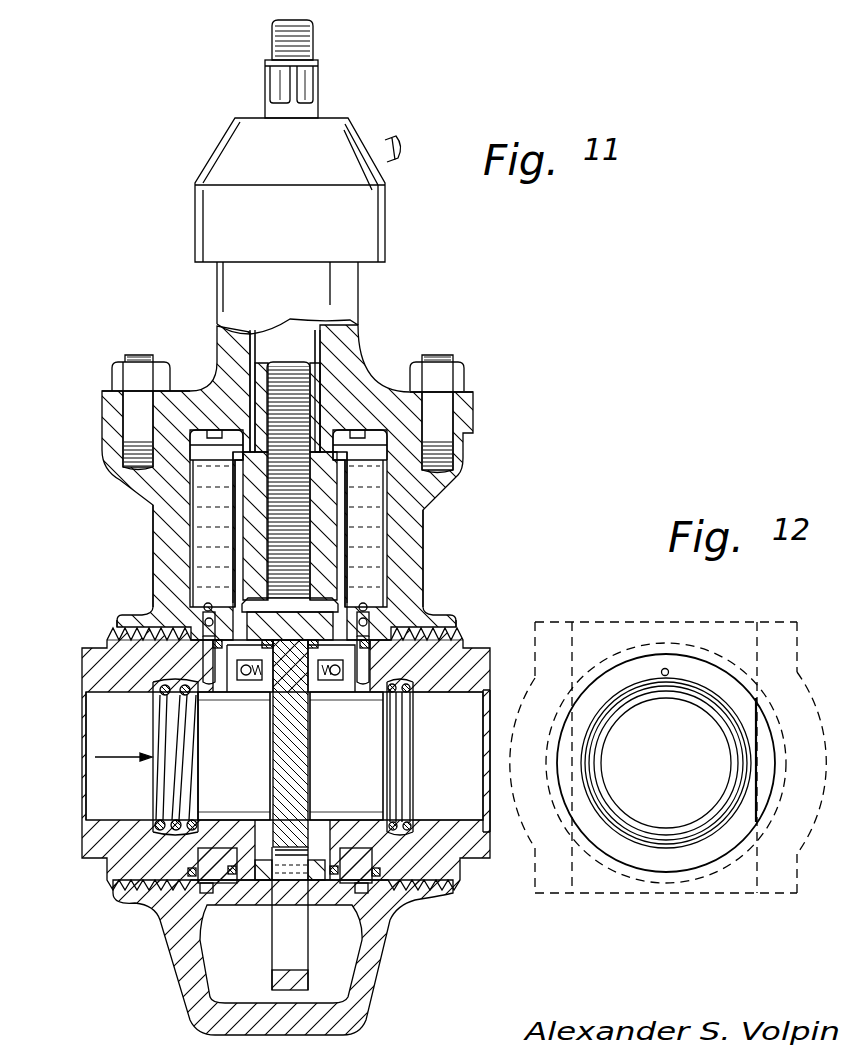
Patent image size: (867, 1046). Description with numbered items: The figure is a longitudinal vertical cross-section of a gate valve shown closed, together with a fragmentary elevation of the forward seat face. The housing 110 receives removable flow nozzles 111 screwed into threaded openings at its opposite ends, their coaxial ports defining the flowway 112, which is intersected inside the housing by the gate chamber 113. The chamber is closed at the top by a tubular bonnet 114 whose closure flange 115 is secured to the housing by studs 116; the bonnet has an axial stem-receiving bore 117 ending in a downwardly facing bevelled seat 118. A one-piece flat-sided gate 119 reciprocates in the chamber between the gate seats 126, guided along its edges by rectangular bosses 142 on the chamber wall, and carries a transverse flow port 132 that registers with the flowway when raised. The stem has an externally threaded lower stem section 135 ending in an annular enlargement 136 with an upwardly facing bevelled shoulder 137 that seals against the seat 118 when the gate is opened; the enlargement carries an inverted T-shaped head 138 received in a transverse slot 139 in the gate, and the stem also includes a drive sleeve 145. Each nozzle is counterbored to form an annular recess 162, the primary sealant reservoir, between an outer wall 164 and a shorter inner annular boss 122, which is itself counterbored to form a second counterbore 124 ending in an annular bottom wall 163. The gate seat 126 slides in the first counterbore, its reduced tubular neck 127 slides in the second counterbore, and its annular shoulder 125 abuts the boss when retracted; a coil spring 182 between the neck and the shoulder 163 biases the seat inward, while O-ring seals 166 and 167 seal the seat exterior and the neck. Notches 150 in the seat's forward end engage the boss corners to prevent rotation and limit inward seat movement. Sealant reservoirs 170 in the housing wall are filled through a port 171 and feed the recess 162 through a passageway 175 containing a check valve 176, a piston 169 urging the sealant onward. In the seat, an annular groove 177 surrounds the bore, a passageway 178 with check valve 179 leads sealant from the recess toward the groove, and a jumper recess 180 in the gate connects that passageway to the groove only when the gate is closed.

In FIG. 11, the housing 110 is at (410, 548).
In FIG. 12, the housing 110 is at (560, 610).
In FIG. 11, the flow nozzle 111 is at (476, 662).
In FIG. 11, the flowway 112 is at (470, 820).
In FIG. 11, the gate chamber 113 is at (333, 532).
In FIG. 11, the tubular bonnet 114 is at (293, 293).
In FIG. 11, the closure flange 115 is at (470, 407).
In FIG. 11, the studs 116 is at (440, 362).
In FIG. 11, the stem-receiving bore 117 is at (323, 348).
In FIG. 11, the bevelled seat 118 is at (319, 455).
In FIG. 11, the gate 119 is at (262, 779).
In FIG. 11, the inner annular boss 122 is at (343, 862).
In FIG. 11, the second counterbore 124 is at (423, 818).
In FIG. 11, the annular shoulder 125 is at (338, 848).
In FIG. 11, the annular gate seat 126 is at (222, 822).
In FIG. 12, the annular gate seat 126 is at (735, 698).
In FIG. 11, the tubular neck 127 is at (372, 698).
In FIG. 12, the tubular neck 127 is at (604, 777).
In FIG. 11, the transverse flow port 132 is at (290, 972).
In FIG. 11, the lower stem section 135 is at (262, 533).
In FIG. 11, the annular enlargement 136 is at (330, 600).
In FIG. 11, the bevelled shoulder 137 is at (314, 603).
In FIG. 11, the inverted T-shaped head 138 is at (212, 598).
In FIG. 11, the slot 139 is at (273, 635).
In FIG. 12, the bosses 142 is at (757, 622).
In FIG. 11, the drive sleeve 145 is at (277, 342).
In FIG. 12, the notches 150 is at (755, 783).
In FIG. 11, the annular recess 162 is at (390, 657).
In FIG. 11, the annular bottom wall 163 is at (437, 695).
In FIG. 11, the outer wall 164 is at (320, 880).
In FIG. 11, the O-ring seal 166 is at (330, 887).
In FIG. 11, the second O-ring seal 167 is at (365, 833).
In FIG. 11, the piston 169 is at (353, 427).
In FIG. 11, the sealant reservoirs 170 is at (383, 500).
In FIG. 11, the port 171 is at (205, 604).
In FIG. 11, the passageway 175 is at (203, 622).
In FIG. 11, the check valve 176 is at (206, 636).
In FIG. 11, the annular groove 177 is at (318, 694).
In FIG. 12, the annular groove 177 is at (620, 695).
In FIG. 11, the passageway 178 is at (212, 700).
In FIG. 12, the passageway 178 is at (665, 668).
In FIG. 11, the check valve 179 is at (205, 700).
In FIG. 11, the jumper recess 180 is at (290, 700).
In FIG. 11, the coil spring 182 is at (405, 757).